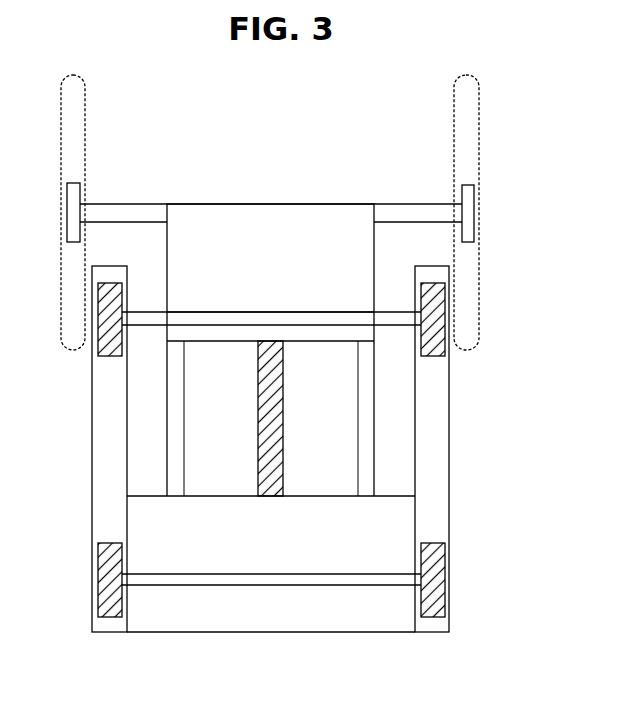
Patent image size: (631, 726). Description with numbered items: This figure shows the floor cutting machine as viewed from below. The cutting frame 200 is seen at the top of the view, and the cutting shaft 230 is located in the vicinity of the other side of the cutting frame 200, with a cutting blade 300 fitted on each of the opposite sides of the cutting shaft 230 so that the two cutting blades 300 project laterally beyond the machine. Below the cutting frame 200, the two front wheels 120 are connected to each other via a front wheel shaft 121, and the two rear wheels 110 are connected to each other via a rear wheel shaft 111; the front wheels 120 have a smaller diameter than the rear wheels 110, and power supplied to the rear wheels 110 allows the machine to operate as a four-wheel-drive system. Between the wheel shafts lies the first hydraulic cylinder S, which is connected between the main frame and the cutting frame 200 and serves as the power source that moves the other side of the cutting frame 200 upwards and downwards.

The cutting blade 300 is at (86, 97).
The cutting frame 200 is at (248, 204).
The cutting shaft 230 is at (413, 203).
The front wheel shaft 121 is at (350, 312).
The front wheel 120 is at (447, 320).
The first hydraulic cylinder S is at (283, 448).
The rear wheel shaft 111 is at (338, 573).
The rear wheel 110 is at (445, 573).